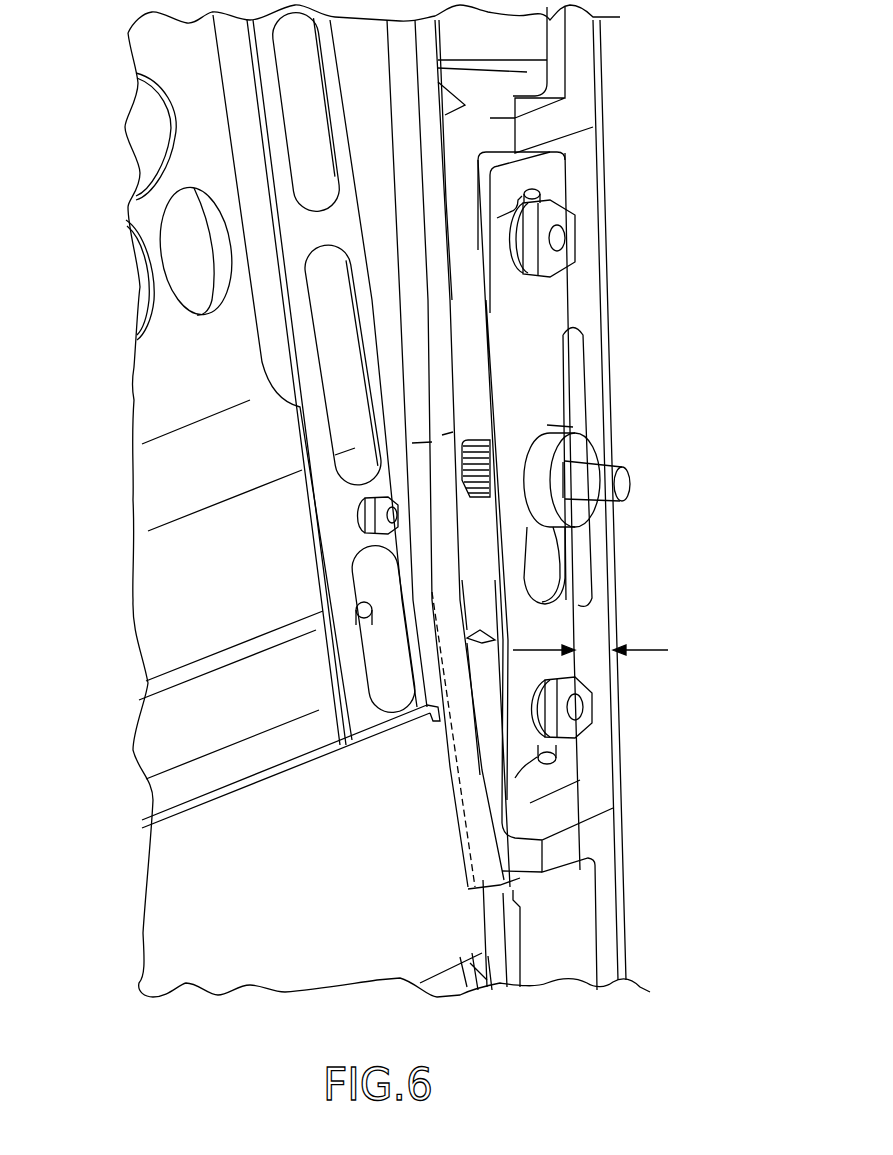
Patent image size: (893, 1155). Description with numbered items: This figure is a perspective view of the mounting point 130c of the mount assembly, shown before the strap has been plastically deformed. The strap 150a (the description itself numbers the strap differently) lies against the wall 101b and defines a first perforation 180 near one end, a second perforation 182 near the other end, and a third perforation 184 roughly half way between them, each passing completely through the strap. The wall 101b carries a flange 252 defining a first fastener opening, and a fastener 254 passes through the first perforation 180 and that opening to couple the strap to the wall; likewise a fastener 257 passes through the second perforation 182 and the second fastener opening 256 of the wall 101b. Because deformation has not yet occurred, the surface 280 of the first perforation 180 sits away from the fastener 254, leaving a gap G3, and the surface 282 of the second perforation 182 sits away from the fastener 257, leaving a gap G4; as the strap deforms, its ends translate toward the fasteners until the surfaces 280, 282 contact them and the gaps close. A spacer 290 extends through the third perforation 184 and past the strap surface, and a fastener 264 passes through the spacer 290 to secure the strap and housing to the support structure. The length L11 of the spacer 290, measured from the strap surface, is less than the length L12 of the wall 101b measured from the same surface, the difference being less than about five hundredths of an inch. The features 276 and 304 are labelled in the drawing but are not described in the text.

The wall 101b is at (506, 57).
The mounting point 130c is at (585, 505).
The first perforation 180 is at (518, 182).
The flange 252 is at (435, 199).
The surface of first perforation 280 is at (550, 201).
The gap G3 is at (501, 220).
The fastener 254 is at (573, 250).
The mounting plate 150a is at (543, 312).
The plate portion 276 is at (544, 371).
The length of spacer L11 is at (573, 427).
The spacer 290 is at (577, 447).
The fastener 264 is at (627, 483).
The third perforation 184 is at (575, 558).
The flange 304 is at (610, 612).
The length of wall L12 is at (605, 652).
The fastener 257 is at (590, 698).
The second fastener opening 256 is at (484, 695).
The surface of second perforation 282 is at (538, 762).
The gap G4 is at (541, 780).
The second perforation 182 is at (578, 770).